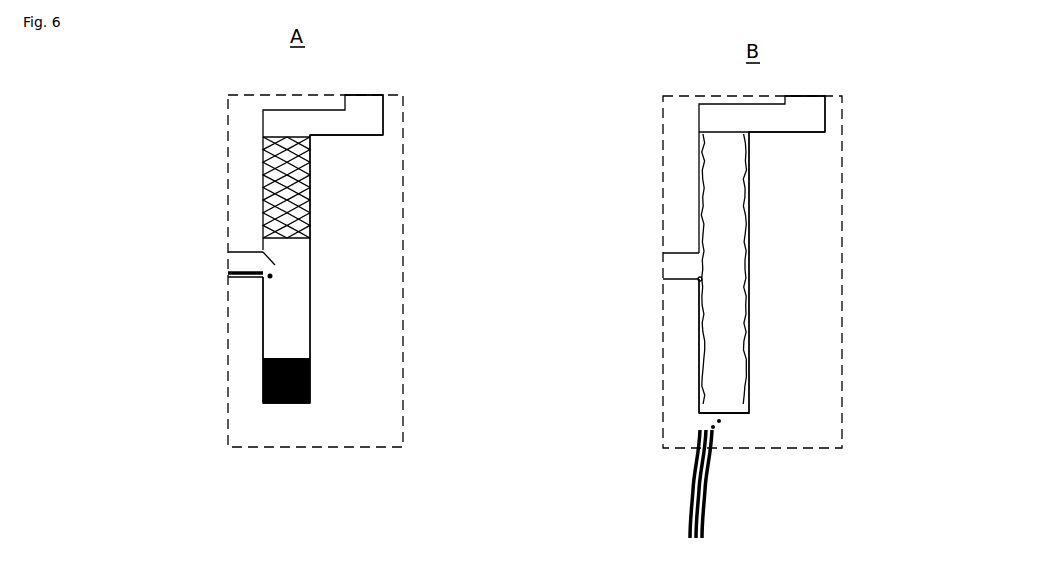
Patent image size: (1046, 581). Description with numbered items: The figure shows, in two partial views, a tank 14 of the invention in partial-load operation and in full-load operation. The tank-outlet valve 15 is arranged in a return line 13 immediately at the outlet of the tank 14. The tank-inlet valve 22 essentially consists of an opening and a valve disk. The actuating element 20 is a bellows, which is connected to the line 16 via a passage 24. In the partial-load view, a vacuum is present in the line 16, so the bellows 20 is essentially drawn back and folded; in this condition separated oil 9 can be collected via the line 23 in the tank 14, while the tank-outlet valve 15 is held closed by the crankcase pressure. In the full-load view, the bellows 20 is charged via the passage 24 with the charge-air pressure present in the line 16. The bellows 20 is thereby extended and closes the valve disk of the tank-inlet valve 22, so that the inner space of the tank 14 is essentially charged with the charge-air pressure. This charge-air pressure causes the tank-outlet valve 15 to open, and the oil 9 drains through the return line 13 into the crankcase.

The oil 9 is at (228, 271).
The return line 13 is at (712, 483).
The tank 14 is at (302, 328).
The tank-outlet valve 15 is at (292, 408).
The line 16 is at (333, 128).
The actuating element 20 is at (296, 214).
The tank-inlet valve 22 is at (252, 276).
The line 23 is at (233, 261).
The passage 24 is at (287, 133).